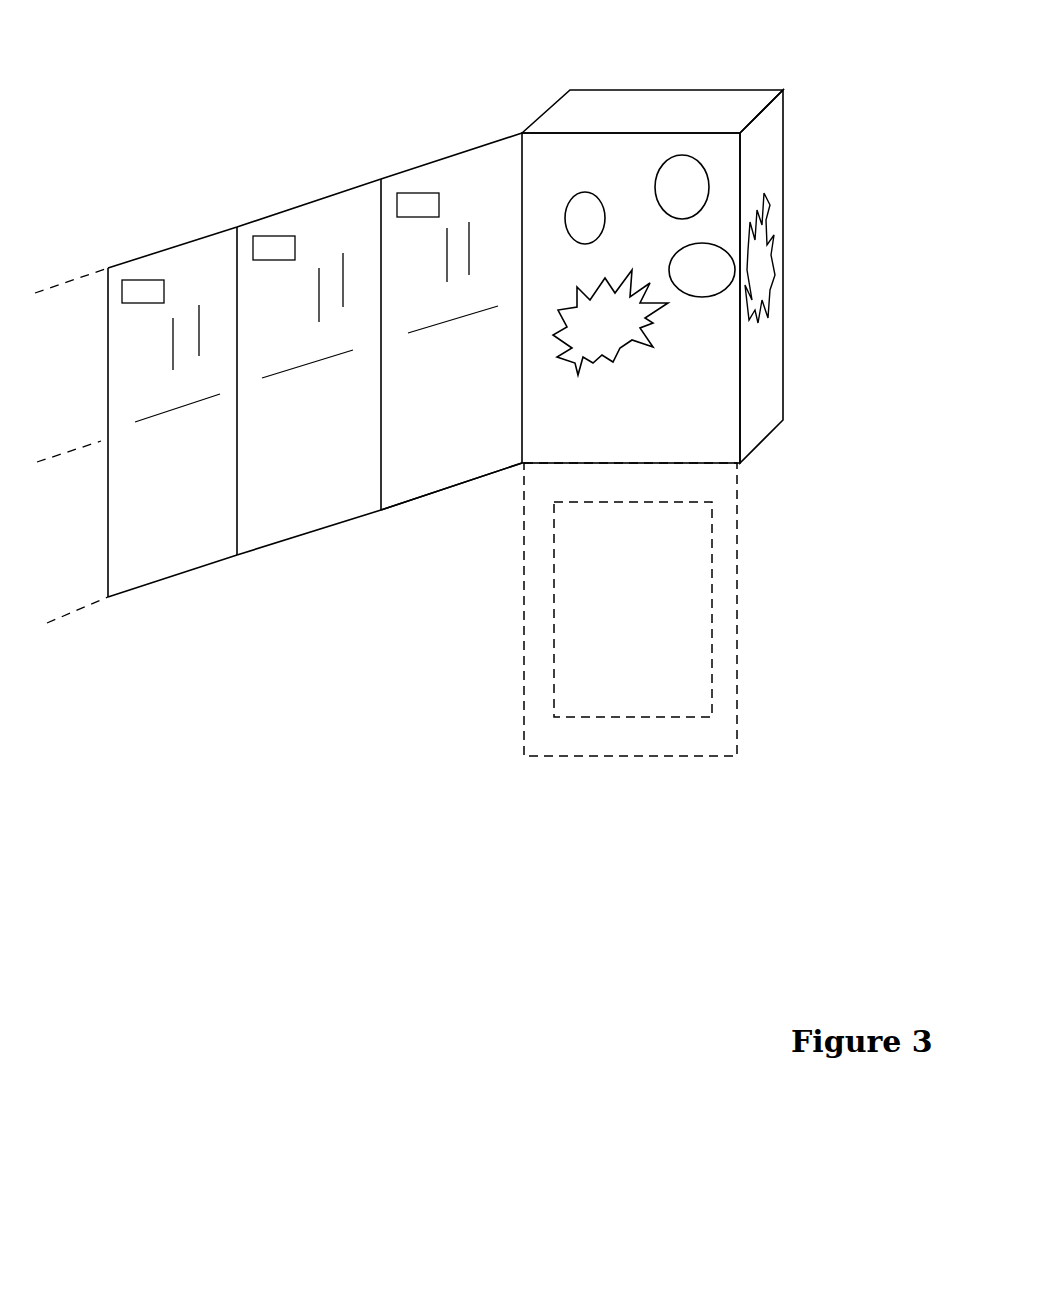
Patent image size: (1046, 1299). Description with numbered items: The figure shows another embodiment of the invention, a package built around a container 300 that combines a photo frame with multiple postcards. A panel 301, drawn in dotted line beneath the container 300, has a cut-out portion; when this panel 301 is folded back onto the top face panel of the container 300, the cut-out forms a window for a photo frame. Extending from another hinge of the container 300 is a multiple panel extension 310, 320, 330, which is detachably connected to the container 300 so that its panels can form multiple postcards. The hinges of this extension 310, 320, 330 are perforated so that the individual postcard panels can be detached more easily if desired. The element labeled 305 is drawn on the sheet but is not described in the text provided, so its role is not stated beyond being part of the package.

The container 300 is at (602, 112).
The panel 301 is at (555, 733).
The first accordion panel 305 is at (415, 172).
The multiple panel extension 310 is at (430, 487).
The multiple panel extension 320 is at (272, 208).
The multiple panel extension 330 is at (183, 565).